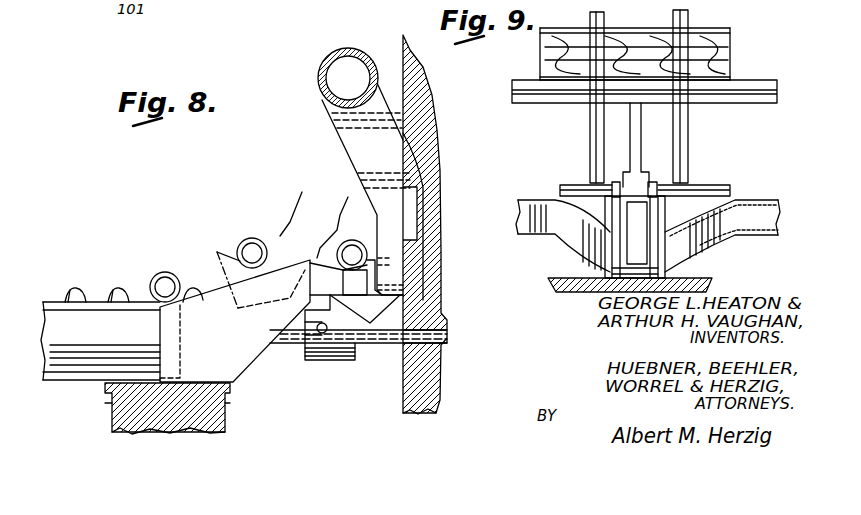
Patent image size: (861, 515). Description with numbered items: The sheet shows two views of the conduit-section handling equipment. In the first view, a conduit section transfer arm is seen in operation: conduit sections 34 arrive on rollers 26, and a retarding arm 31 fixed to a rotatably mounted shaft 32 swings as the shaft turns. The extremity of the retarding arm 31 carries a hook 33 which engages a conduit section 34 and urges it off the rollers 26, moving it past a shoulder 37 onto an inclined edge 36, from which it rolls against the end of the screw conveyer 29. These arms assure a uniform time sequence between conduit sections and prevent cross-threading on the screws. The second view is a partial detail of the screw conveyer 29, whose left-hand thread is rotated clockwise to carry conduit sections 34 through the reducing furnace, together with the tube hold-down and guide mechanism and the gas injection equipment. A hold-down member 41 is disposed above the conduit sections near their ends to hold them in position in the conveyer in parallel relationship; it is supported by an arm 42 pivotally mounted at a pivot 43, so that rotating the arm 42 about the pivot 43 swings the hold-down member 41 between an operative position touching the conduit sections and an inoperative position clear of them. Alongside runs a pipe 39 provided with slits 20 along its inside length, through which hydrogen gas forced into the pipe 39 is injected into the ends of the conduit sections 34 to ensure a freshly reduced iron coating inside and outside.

In FIG. 9, the slots 20 is at (767, 198).
In FIG. 8, the rollers 26 is at (323, 263).
In FIG. 8, the screw conveyer 29 is at (118, 285).
In FIG. 9, the screw conveyer 29 is at (700, 48).
In FIG. 8, the retarding arm 31 is at (348, 143).
In FIG. 8, the shaft 32 is at (321, 64).
In FIG. 8, the hook 33 is at (375, 350).
In FIG. 8, the conduit section 34 is at (165, 272).
In FIG. 9, the conduit section 34 is at (690, 125).
In FIG. 8, the inclined edge 36 is at (205, 292).
In FIG. 8, the shoulder 37 is at (283, 248).
In FIG. 9, the pipe 39 is at (532, 231).
In FIG. 9, the hold-down member 41 is at (545, 105).
In FIG. 9, the arm 42 is at (640, 143).
In FIG. 9, the pivot 43 is at (605, 225).